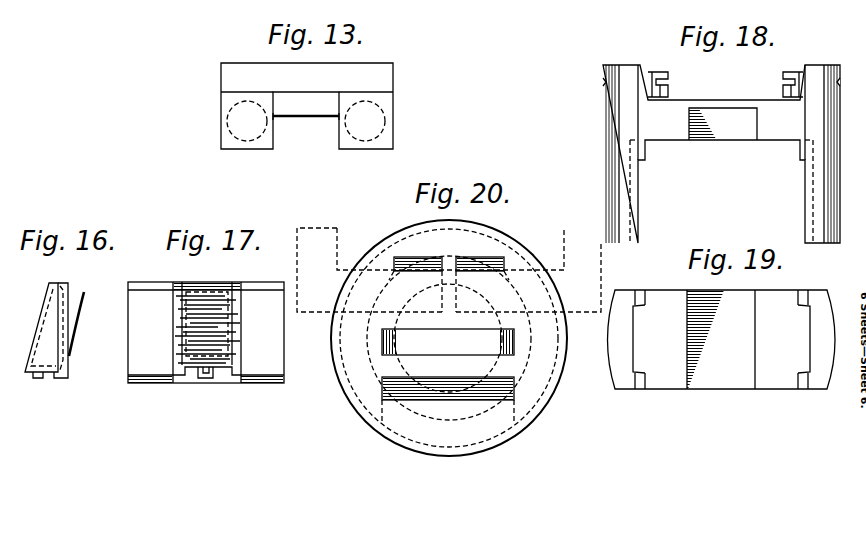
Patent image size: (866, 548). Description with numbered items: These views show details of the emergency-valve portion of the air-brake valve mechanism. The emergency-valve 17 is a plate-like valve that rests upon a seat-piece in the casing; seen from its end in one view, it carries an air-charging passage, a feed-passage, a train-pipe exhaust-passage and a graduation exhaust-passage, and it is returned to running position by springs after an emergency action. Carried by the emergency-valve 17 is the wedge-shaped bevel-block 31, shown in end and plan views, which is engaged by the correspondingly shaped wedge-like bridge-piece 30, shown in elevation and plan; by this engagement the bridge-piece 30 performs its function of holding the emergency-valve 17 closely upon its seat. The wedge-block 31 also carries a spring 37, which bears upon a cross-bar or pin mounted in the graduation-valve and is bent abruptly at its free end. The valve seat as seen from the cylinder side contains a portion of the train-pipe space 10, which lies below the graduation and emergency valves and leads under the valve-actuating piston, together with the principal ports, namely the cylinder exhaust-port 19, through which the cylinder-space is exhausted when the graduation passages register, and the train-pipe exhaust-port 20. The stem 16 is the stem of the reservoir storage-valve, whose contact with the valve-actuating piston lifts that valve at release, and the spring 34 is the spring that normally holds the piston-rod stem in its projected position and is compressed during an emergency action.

In FIG. 13, the emergency-valve 17 is at (297, 116).
In FIG. 16, the bevel-block 31 is at (43, 329).
In FIG. 17, the bevel-block 31 is at (140, 354).
In FIG. 16, the spring 37 is at (71, 334).
In FIG. 20, the cylinder exhaust-port 19 is at (408, 264).
In FIG. 20, the spring 34 is at (398, 273).
In FIG. 20, the train-pipe space 10 is at (448, 342).
In FIG. 20, the train-pipe exhaust-port 20 is at (506, 394).
In FIG. 18, the bridge-piece 30 is at (720, 134).
In FIG. 19, the bridge-piece 30 is at (708, 380).
In FIG. 18, the stem 16 is at (735, 48).